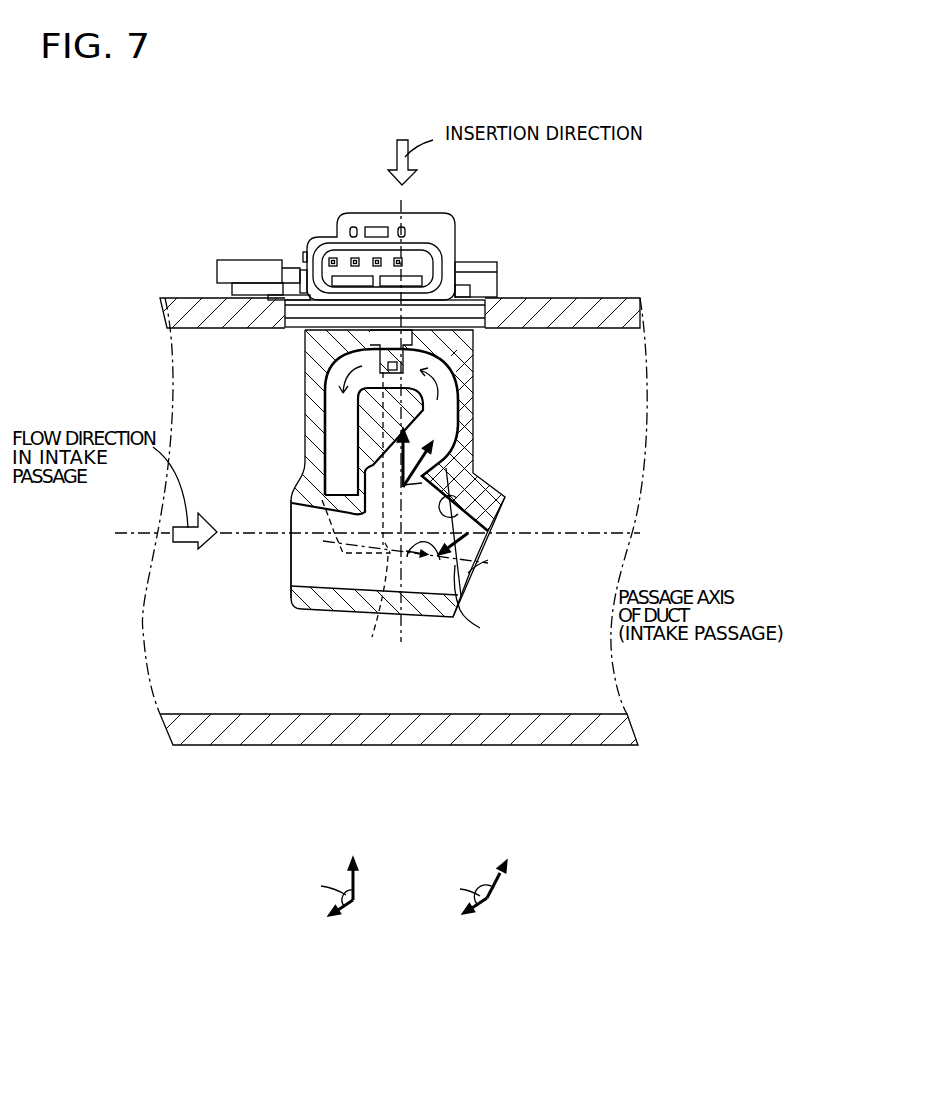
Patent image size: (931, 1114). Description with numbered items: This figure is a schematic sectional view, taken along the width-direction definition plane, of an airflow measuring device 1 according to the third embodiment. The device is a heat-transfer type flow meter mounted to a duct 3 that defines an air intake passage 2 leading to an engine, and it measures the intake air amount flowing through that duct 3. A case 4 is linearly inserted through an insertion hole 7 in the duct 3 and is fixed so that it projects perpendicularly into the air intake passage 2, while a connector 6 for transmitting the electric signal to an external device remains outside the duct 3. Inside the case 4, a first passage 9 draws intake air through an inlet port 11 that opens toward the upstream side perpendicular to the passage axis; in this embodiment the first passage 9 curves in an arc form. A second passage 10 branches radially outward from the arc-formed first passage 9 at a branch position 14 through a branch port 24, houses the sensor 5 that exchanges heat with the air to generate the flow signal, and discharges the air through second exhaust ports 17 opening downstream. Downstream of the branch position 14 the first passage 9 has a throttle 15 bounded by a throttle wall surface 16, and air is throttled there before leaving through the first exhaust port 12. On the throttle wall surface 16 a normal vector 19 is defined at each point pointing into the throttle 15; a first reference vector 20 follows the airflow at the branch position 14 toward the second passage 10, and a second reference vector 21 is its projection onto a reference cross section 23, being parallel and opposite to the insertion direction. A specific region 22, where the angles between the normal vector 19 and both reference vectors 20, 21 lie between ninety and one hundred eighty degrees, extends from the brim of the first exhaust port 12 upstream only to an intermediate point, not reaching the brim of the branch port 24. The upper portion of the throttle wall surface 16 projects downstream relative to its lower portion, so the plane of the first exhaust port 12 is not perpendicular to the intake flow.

The airflow measuring device 1 is at (207, 173).
The air intake passage 2 is at (183, 362).
The duct 3 is at (227, 745).
The case 4 is at (394, 475).
The sensor 5 is at (380, 353).
The connector 6 is at (343, 259).
The insertion hole 7 is at (474, 292).
The first passage 9 is at (318, 578).
The second passage 10 is at (327, 379).
The inlet port 11 is at (290, 552).
The first exhaust port 12 is at (477, 570).
The branch position 14 is at (455, 460).
The throttle 15 is at (437, 583).
The throttle wall surface 16 is at (467, 522).
The second exhaust port 17 is at (356, 514).
The normal vector 19 is at (470, 536).
The first reference vector 20 is at (432, 450).
The second reference vector 21 is at (395, 468).
The specific region 22 is at (487, 545).
The reference cross section 23 is at (440, 560).
The branch port 24 is at (403, 485).